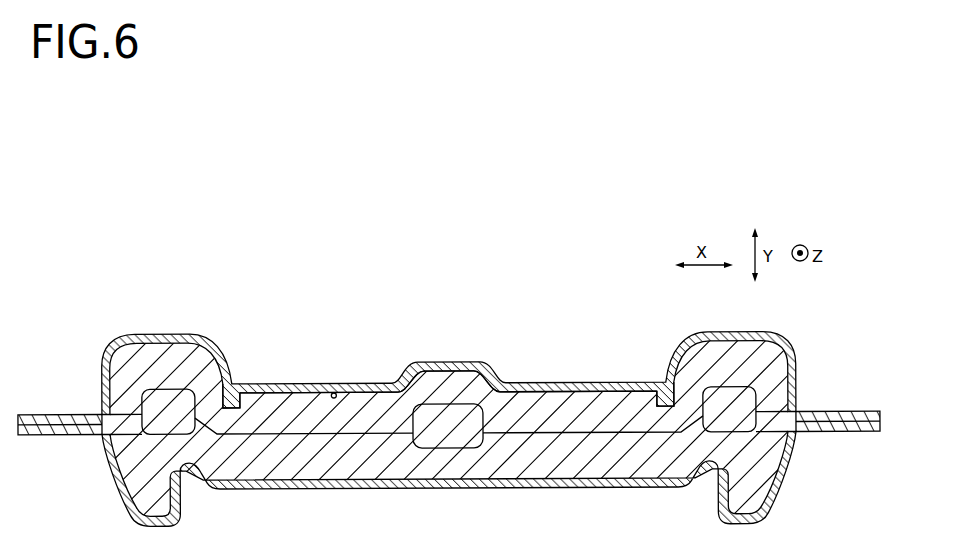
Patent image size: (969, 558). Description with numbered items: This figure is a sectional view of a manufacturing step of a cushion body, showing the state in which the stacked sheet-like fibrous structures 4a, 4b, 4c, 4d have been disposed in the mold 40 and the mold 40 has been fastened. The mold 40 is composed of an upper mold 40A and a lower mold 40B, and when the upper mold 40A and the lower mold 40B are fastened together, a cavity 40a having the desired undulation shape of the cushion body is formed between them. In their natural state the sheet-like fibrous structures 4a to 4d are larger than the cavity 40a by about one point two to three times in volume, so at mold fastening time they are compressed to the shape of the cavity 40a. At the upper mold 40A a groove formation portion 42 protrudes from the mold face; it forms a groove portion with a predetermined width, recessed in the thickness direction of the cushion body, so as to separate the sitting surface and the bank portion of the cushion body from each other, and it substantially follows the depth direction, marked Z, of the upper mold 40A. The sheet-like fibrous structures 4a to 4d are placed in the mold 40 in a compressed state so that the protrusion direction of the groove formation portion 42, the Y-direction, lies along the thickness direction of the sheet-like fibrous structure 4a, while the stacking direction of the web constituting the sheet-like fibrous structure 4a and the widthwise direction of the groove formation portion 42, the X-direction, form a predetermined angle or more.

The mold 40 is at (448, 405).
The upper mold 40A is at (534, 382).
The lower mold 40B is at (578, 489).
The cavity 40a is at (334, 393).
The groove formation portion 42 is at (247, 384).
The sheet-like fibrous structure 4a is at (456, 380).
The sheet-like fibrous structure 4b is at (308, 462).
The sheet-like fibrous structure 4c is at (153, 429).
The sheet-like fibrous structure 4d is at (448, 440).